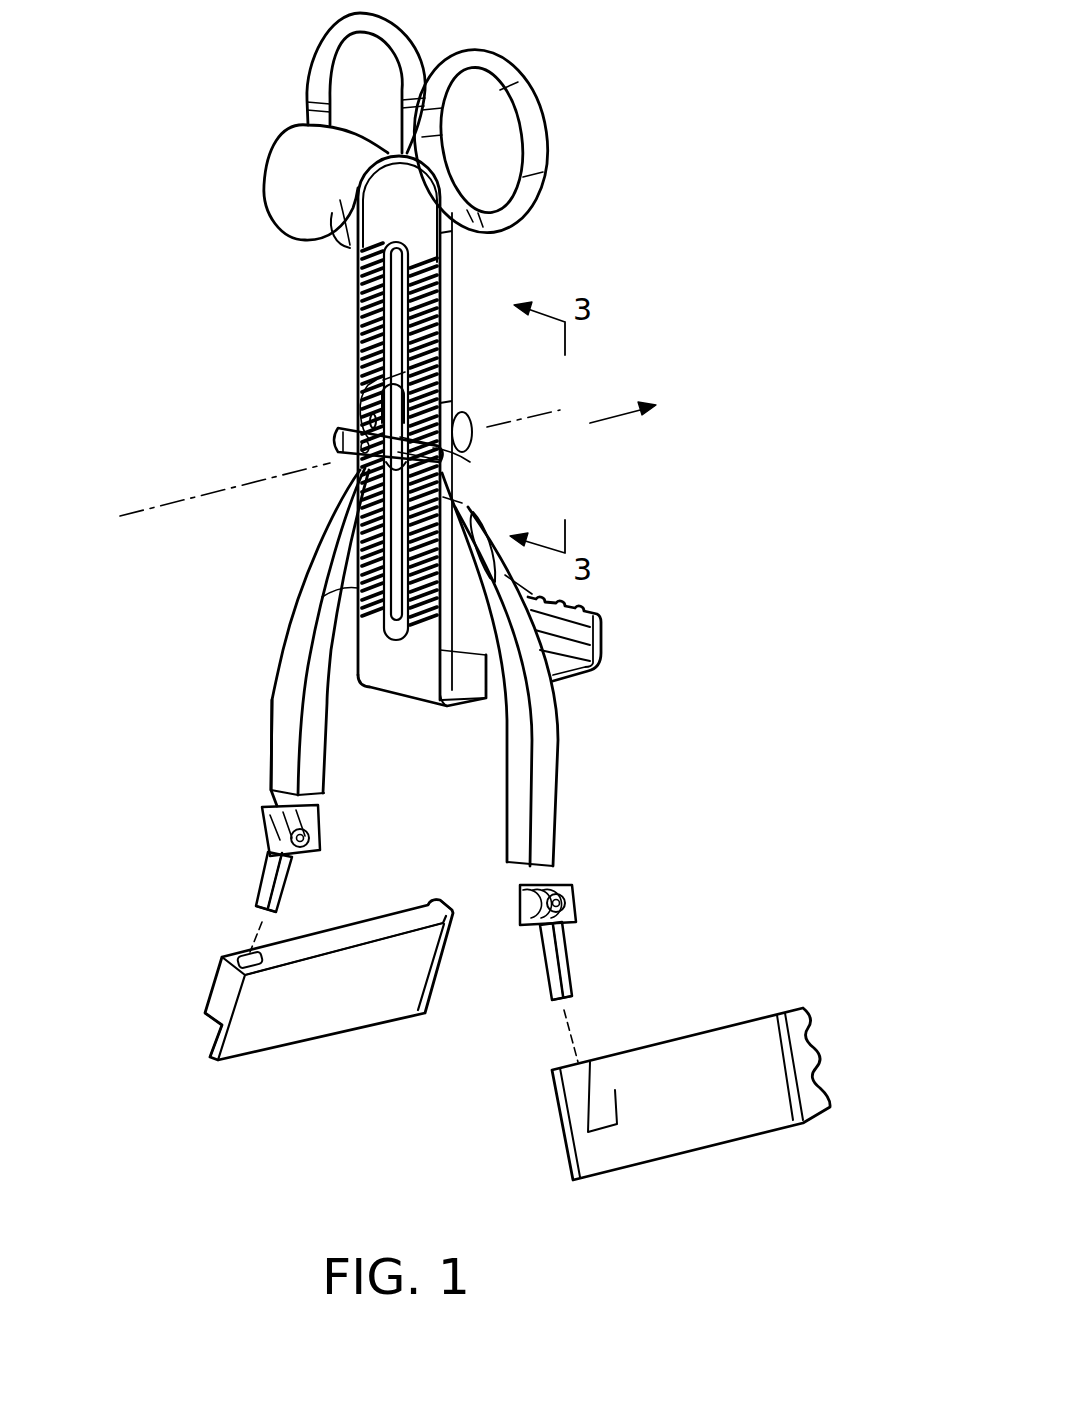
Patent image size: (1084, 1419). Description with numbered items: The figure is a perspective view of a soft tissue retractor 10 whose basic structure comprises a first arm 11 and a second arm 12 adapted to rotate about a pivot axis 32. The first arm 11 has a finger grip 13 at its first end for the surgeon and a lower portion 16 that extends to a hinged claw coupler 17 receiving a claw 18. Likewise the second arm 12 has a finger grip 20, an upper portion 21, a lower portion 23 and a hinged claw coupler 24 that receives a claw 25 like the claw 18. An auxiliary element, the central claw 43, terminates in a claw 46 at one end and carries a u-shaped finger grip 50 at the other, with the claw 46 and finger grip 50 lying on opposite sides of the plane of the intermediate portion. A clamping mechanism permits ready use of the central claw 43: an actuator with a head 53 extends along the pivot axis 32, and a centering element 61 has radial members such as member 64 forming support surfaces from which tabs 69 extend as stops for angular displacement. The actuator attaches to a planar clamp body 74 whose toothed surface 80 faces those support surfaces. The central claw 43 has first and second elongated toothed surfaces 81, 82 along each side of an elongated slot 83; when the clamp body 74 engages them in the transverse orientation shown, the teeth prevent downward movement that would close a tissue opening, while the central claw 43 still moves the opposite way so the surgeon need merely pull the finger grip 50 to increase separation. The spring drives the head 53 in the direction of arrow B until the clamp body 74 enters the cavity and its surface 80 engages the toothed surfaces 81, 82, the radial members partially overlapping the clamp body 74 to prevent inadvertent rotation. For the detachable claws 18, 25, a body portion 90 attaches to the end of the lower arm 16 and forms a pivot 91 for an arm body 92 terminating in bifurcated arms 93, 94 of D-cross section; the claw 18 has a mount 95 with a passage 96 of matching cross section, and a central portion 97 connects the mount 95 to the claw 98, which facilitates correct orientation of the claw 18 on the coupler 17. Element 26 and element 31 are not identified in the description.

The soft tissue retractor 10 is at (668, 250).
The first arm 11 is at (293, 590).
The second arm 12 is at (480, 508).
The finger grip 13 is at (338, 24).
The lower portion 16 is at (270, 705).
The hinged claw coupler 17 is at (266, 866).
The claw 18 is at (215, 975).
The finger grip 20 is at (524, 117).
The upper portion 21 is at (452, 274).
The lower portion 23 is at (550, 733).
The hinged claw coupler 24 is at (563, 962).
The claw 25 is at (693, 1060).
The pivot 26 is at (347, 238).
The pawl 31 is at (352, 395).
The pivot axis 32 is at (572, 406).
The central claw 43 is at (356, 301).
The claw 46 is at (588, 606).
The u-shaped finger grip 50 is at (290, 222).
The head 53 is at (465, 418).
The centering element 61 is at (396, 400).
The radial member 64 is at (340, 470).
The tabs 69 is at (370, 421).
The clamp body 74 is at (338, 440).
The surface 80 is at (445, 452).
The first elongated toothed surface 81 is at (363, 583).
The second elongated toothed surface 82 is at (484, 698).
The elongated slot 83 is at (397, 620).
The body portion 90 is at (312, 820).
The pivot 91 is at (312, 842).
The arm body 92 is at (288, 875).
The bifurcated arm 93 is at (262, 906).
The bifurcated arm 94 is at (276, 910).
The mount 95 is at (213, 1030).
The passage 96 is at (250, 955).
The central portion 97 is at (345, 1013).
The claw 98 is at (436, 903).